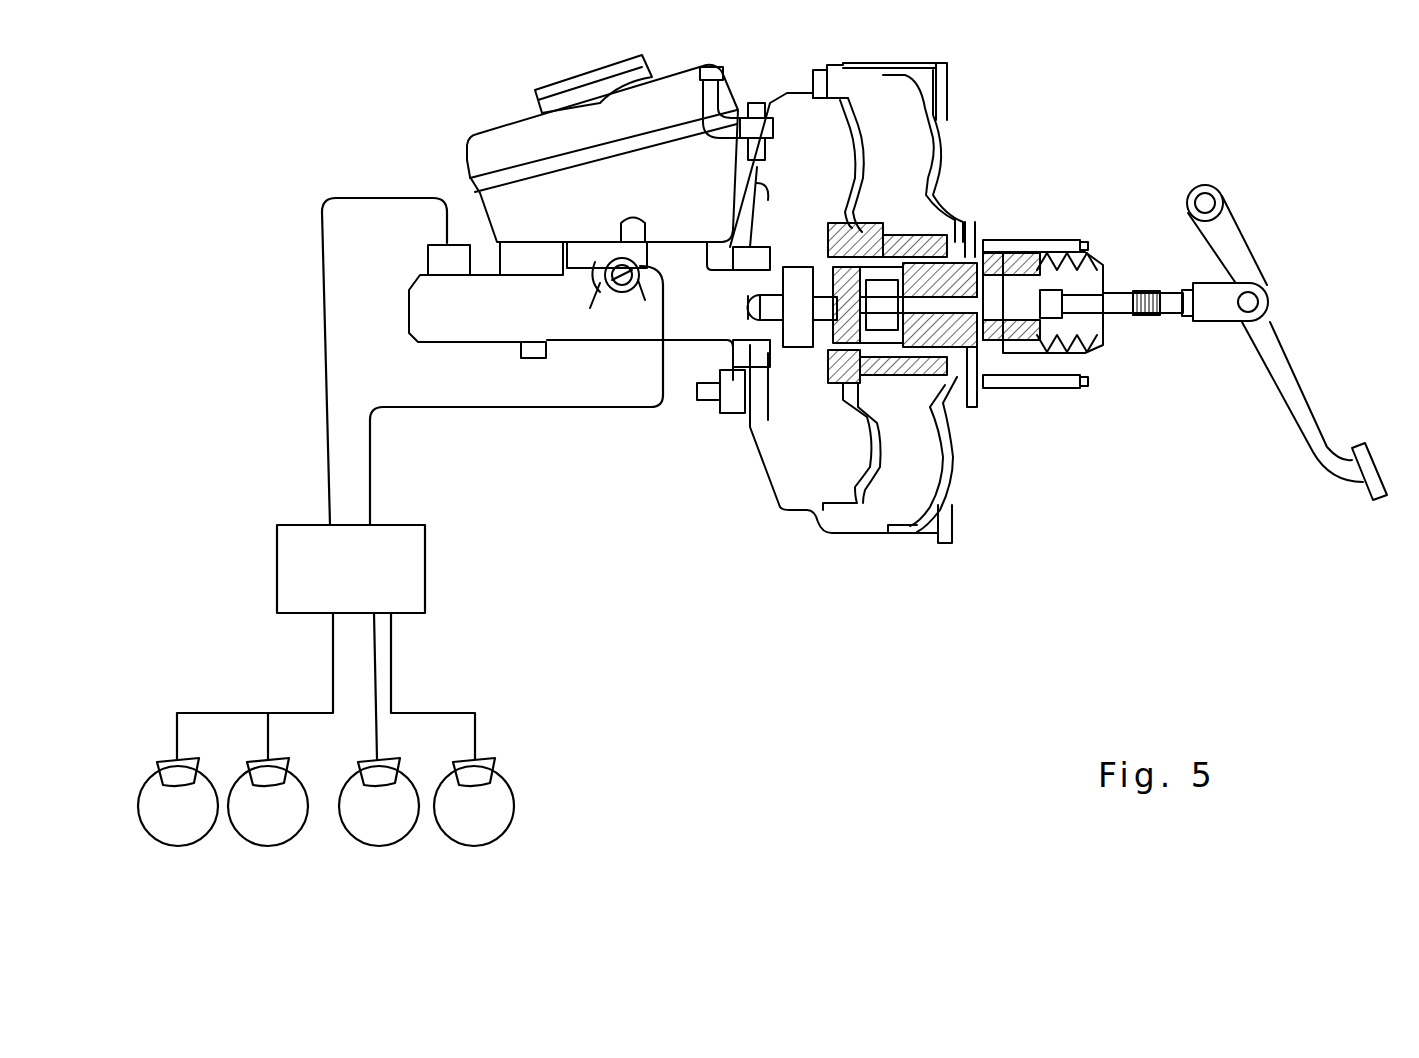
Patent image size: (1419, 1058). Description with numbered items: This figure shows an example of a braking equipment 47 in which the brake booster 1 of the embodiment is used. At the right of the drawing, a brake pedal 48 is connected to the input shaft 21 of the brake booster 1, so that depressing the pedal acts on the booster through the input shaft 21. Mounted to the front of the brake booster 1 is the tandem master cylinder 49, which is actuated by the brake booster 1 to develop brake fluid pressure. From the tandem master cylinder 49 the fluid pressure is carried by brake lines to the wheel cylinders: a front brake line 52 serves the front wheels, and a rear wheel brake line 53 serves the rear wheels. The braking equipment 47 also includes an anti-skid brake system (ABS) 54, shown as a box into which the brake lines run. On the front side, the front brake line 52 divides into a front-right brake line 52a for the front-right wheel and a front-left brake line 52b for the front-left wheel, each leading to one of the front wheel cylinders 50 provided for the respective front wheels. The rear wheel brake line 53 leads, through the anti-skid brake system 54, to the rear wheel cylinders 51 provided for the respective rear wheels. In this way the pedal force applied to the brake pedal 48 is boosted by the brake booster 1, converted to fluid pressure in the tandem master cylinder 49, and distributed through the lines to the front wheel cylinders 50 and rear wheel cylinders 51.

The brake booster 1 is at (952, 188).
The input shaft 21 is at (1122, 305).
The braking equipment 47 is at (908, 573).
The brake pedal 48 is at (1362, 490).
The tandem master cylinder 49 is at (414, 318).
The front wheel cylinders 50 is at (470, 758).
The rear wheel cylinders 51 is at (255, 760).
The front brake line 52 is at (597, 410).
The front-right brake line 52a is at (396, 656).
The front-left brake line 52b is at (375, 720).
The rear wheel brake line 53 is at (326, 343).
The anti-skid brake system (ABS) 54 is at (425, 570).